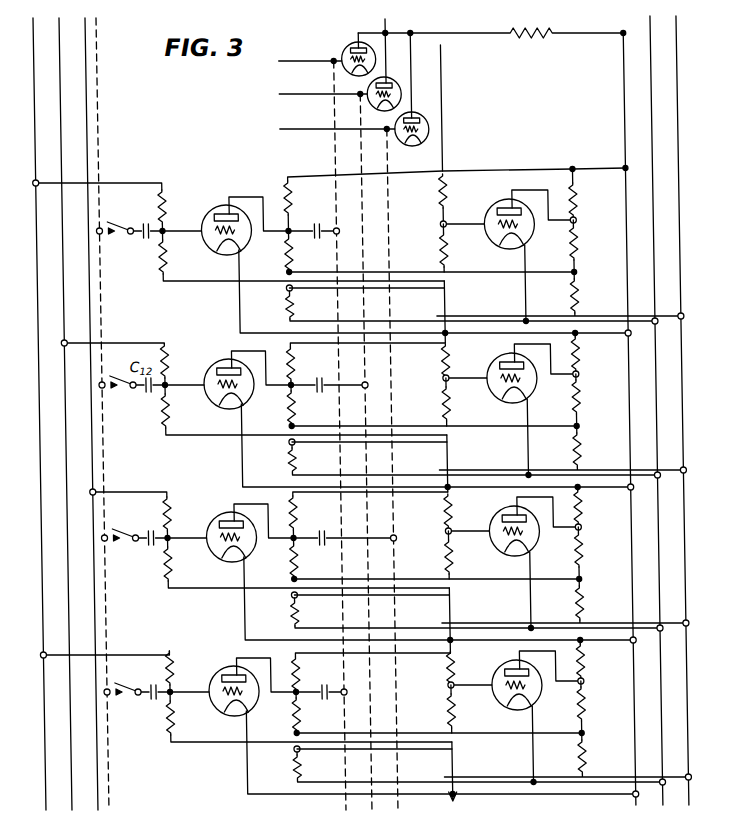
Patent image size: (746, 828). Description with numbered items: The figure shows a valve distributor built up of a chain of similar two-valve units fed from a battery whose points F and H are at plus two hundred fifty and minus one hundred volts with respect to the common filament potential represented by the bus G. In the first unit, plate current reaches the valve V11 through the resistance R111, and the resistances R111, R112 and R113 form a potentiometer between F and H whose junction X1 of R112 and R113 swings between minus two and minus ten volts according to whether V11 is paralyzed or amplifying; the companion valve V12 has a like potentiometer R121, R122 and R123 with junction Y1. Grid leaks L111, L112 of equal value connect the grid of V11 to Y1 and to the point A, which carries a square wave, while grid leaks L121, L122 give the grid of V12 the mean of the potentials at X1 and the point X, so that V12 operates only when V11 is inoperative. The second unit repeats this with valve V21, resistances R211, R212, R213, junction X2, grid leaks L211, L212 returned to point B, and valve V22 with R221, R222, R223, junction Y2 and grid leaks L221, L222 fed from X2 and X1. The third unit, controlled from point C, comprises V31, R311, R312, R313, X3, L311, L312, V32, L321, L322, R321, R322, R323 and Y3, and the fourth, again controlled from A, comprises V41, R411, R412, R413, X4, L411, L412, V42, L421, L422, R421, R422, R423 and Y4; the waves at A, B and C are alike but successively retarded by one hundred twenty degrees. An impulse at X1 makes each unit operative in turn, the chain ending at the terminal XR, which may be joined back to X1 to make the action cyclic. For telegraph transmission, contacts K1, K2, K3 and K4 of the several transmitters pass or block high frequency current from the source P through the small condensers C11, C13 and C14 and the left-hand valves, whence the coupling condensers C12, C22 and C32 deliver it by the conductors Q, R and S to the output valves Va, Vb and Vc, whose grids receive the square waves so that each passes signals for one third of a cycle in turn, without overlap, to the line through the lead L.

The point A is at (28, 414).
The point B is at (57, 414).
The point C is at (83, 414).
The source P is at (109, 414).
The control line Q is at (333, 435).
The control line R is at (359, 452).
The control line S is at (385, 469).
The point X is at (450, 108).
The lead L is at (391, 21).
The battery point F is at (604, 405).
The zero volt bus G is at (647, 405).
The battery point H is at (695, 405).
The valve Va is at (327, 53).
The valve Vb is at (340, 72).
The valve Vc is at (354, 89).
The small condenser C11 is at (164, 221).
The contact K1 is at (119, 240).
The grid leak L111 is at (179, 210).
The grid leak L112 is at (301, 256).
The valve V11 is at (416, 266).
The resistance R111 is at (456, 200).
The small condenser C12 is at (314, 222).
The resistance R112 is at (430, 253).
The junction X1 is at (274, 307).
The resistance R113 is at (471, 304).
The grid leak L121 is at (462, 200).
The grid leak L122 is at (460, 283).
The valve V12 is at (529, 255).
The resistance R121 is at (590, 196).
The resistance R122 is at (591, 246).
The junction Y1 is at (591, 274).
The resistance R123 is at (560, 295).
The contact K2 is at (122, 394).
The grid leak L211 is at (181, 364).
The grid leak L212 is at (304, 410).
The valve V21 is at (418, 420).
The resistance R211 is at (366, 365).
The small condenser C22 is at (330, 376).
The resistance R212 is at (429, 408).
The junction X2 is at (276, 431).
The resistance R213 is at (474, 458).
The grid leak L221 is at (464, 362).
The grid leak L222 is at (463, 435).
The valve V22 is at (531, 409).
The resistance R221 is at (593, 355).
The resistance R222 is at (594, 400).
The junction Y2 is at (594, 428).
The resistance R223 is at (563, 449).
The small condenser C13 is at (169, 528).
The contact K3 is at (124, 547).
The grid leak L311 is at (184, 517).
The grid leak L312 is at (307, 563).
The valve V31 is at (421, 573).
The resistance R311 is at (369, 516).
The small condenser C32 is at (345, 529).
The resistance R312 is at (436, 560).
The junction X3 is at (279, 614).
The resistance R313 is at (476, 611).
The grid leak L321 is at (467, 514).
The grid leak L322 is at (465, 592).
The valve V32 is at (534, 562).
The resistance R321 is at (596, 508).
The resistance R322 is at (596, 553).
The junction Y3 is at (596, 581).
The resistance R323 is at (565, 602).
The small condenser C14 is at (172, 682).
The contact K4 is at (127, 701).
The grid leak L411 is at (186, 671).
The grid leak L412 is at (309, 717).
The valve V41 is at (423, 727).
The resistance R411 is at (371, 674).
The resistance R412 is at (438, 714).
The junction X4 is at (281, 768).
The resistance R413 is at (479, 765).
The grid leak L421 is at (469, 669).
The grid leak L422 is at (467, 709).
The output lead XR is at (467, 779).
The valve V42 is at (536, 716).
The resistance R421 is at (598, 662).
The resistance R422 is at (599, 707).
The junction Y4 is at (599, 735).
The resistance R423 is at (568, 756).